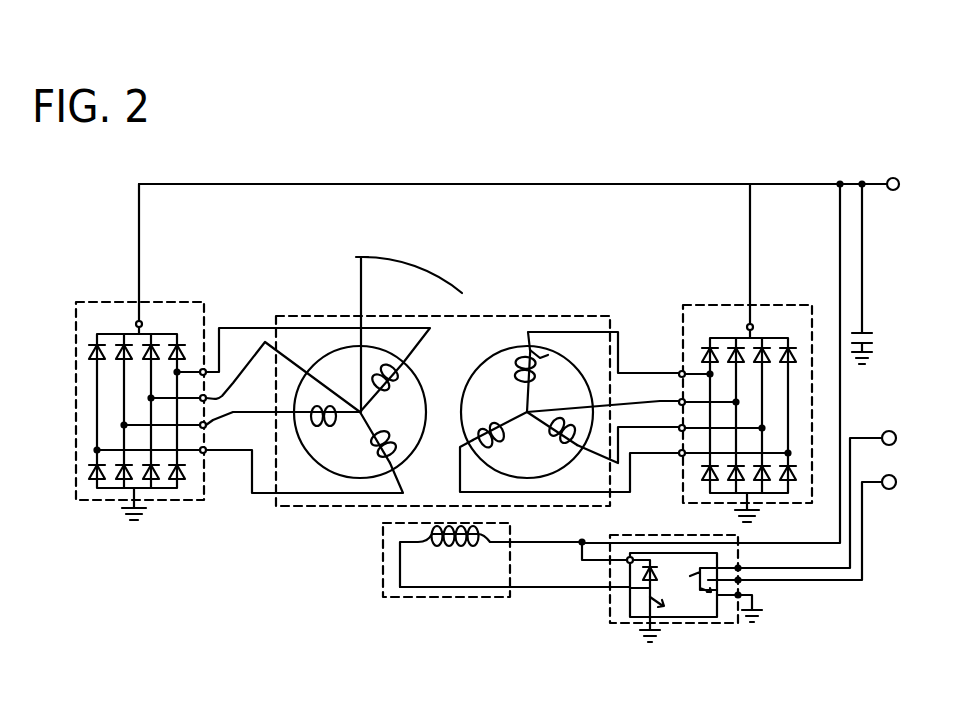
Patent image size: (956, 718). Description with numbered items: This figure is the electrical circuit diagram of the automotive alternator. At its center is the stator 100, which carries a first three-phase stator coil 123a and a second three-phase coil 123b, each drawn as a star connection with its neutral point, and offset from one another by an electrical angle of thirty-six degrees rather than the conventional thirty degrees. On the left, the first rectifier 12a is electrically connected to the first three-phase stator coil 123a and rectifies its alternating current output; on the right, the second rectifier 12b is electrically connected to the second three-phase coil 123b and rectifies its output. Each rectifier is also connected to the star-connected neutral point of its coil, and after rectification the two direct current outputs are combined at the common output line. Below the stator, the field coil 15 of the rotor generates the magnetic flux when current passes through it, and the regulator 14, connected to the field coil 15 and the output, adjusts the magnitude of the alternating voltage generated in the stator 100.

The first rectifier 12a is at (196, 300).
The second rectifier 12b is at (716, 302).
The stator 100 is at (479, 318).
The first three-phase stator coil 123a is at (322, 432).
The second three-phase coil 123b is at (548, 355).
The field coil 15 is at (423, 598).
The regulator 14 is at (687, 624).